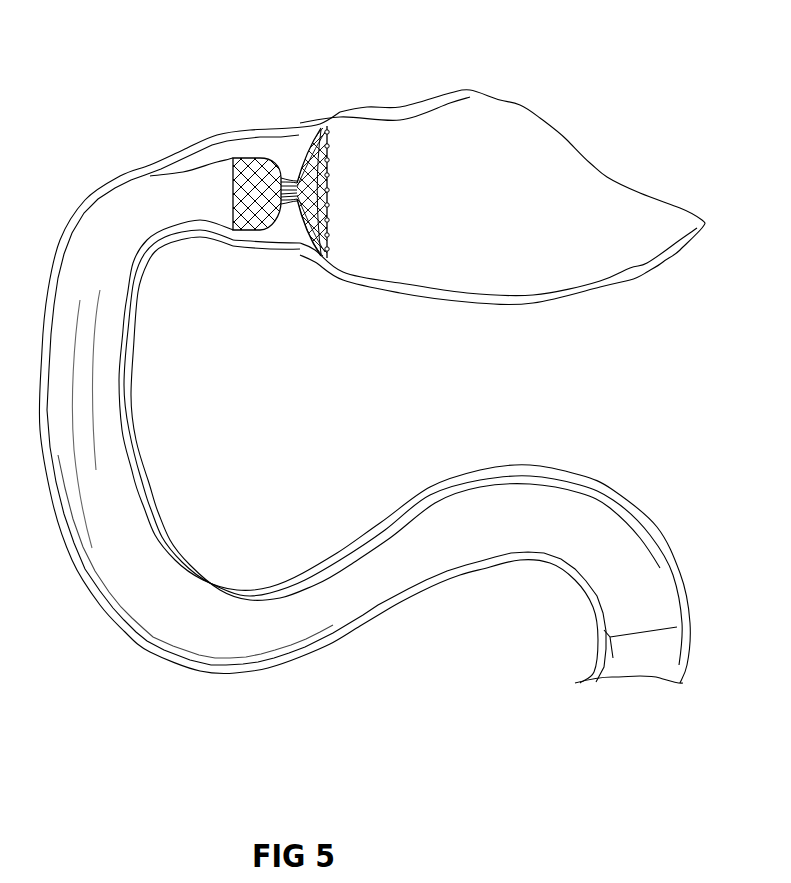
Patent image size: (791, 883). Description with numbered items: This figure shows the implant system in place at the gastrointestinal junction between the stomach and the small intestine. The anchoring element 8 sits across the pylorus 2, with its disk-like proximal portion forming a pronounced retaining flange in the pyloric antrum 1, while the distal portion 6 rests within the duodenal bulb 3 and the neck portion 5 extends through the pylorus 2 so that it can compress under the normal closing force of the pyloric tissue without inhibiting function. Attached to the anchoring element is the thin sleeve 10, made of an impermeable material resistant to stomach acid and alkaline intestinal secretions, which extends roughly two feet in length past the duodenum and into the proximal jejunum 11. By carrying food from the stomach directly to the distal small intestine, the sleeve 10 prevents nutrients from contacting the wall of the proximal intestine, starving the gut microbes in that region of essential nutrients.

The pyloric antrum 1 is at (380, 155).
The pylorus 2 is at (315, 198).
The duodenal bulb 3 is at (223, 152).
The neck portion 5 is at (317, 218).
The distal portion 6 is at (250, 158).
The anchoring element 8 is at (322, 225).
The sleeve 10 is at (658, 568).
The proximal jejunum 11 is at (613, 657).